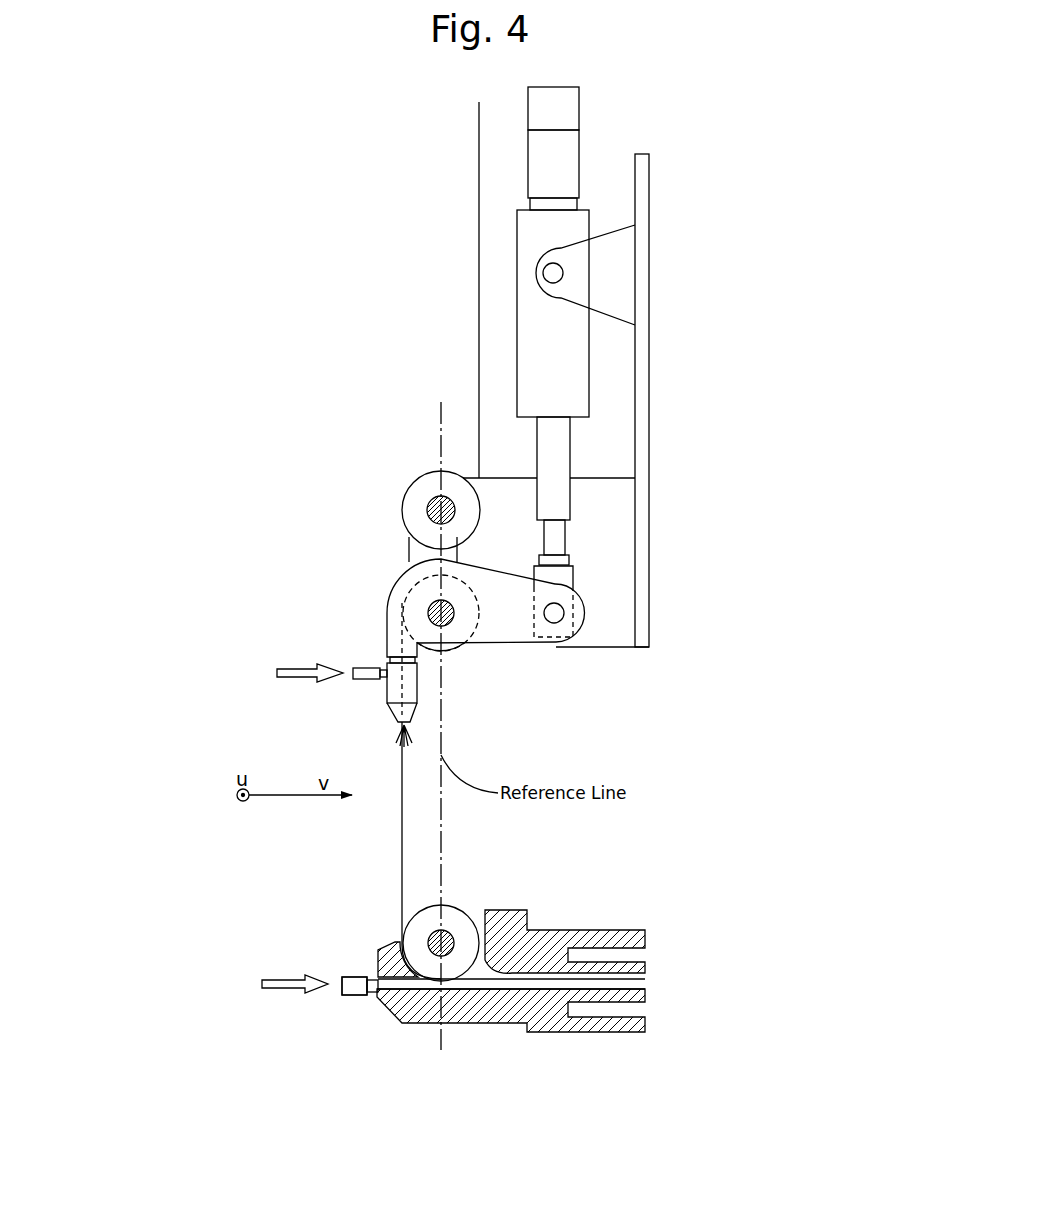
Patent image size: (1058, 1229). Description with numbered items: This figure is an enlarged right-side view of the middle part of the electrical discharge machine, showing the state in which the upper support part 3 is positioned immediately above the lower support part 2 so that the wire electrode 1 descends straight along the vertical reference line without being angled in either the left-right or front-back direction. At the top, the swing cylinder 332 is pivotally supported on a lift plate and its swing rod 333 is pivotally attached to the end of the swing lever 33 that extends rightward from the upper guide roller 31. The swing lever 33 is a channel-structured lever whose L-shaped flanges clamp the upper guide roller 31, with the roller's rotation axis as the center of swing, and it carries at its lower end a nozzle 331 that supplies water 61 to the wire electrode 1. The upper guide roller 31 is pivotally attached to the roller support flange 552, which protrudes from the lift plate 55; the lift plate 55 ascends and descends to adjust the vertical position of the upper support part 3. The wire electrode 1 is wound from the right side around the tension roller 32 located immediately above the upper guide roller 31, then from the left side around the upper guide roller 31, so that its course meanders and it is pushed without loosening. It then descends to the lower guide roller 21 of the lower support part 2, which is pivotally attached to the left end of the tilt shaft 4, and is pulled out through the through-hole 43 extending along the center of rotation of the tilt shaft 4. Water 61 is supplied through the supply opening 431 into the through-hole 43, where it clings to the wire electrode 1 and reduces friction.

The wire electrode 1 is at (479, 150).
The lower support part 2 is at (421, 984).
The lower guide roller 21 is at (420, 917).
The upper support part 3 is at (386, 590).
The upper guide roller 31 is at (452, 653).
The tension roller 32 is at (413, 492).
The swing lever 33 is at (387, 636).
The nozzle 331 is at (380, 693).
The swing cylinder 332 is at (531, 332).
The swing rod 333 is at (559, 458).
The tilt shaft 4 is at (587, 1008).
The through-hole 43 is at (645, 976).
The supply opening 431 is at (350, 995).
The lift plate 55 is at (643, 557).
The roller support flange 552 is at (589, 641).
The water 61 is at (277, 687).